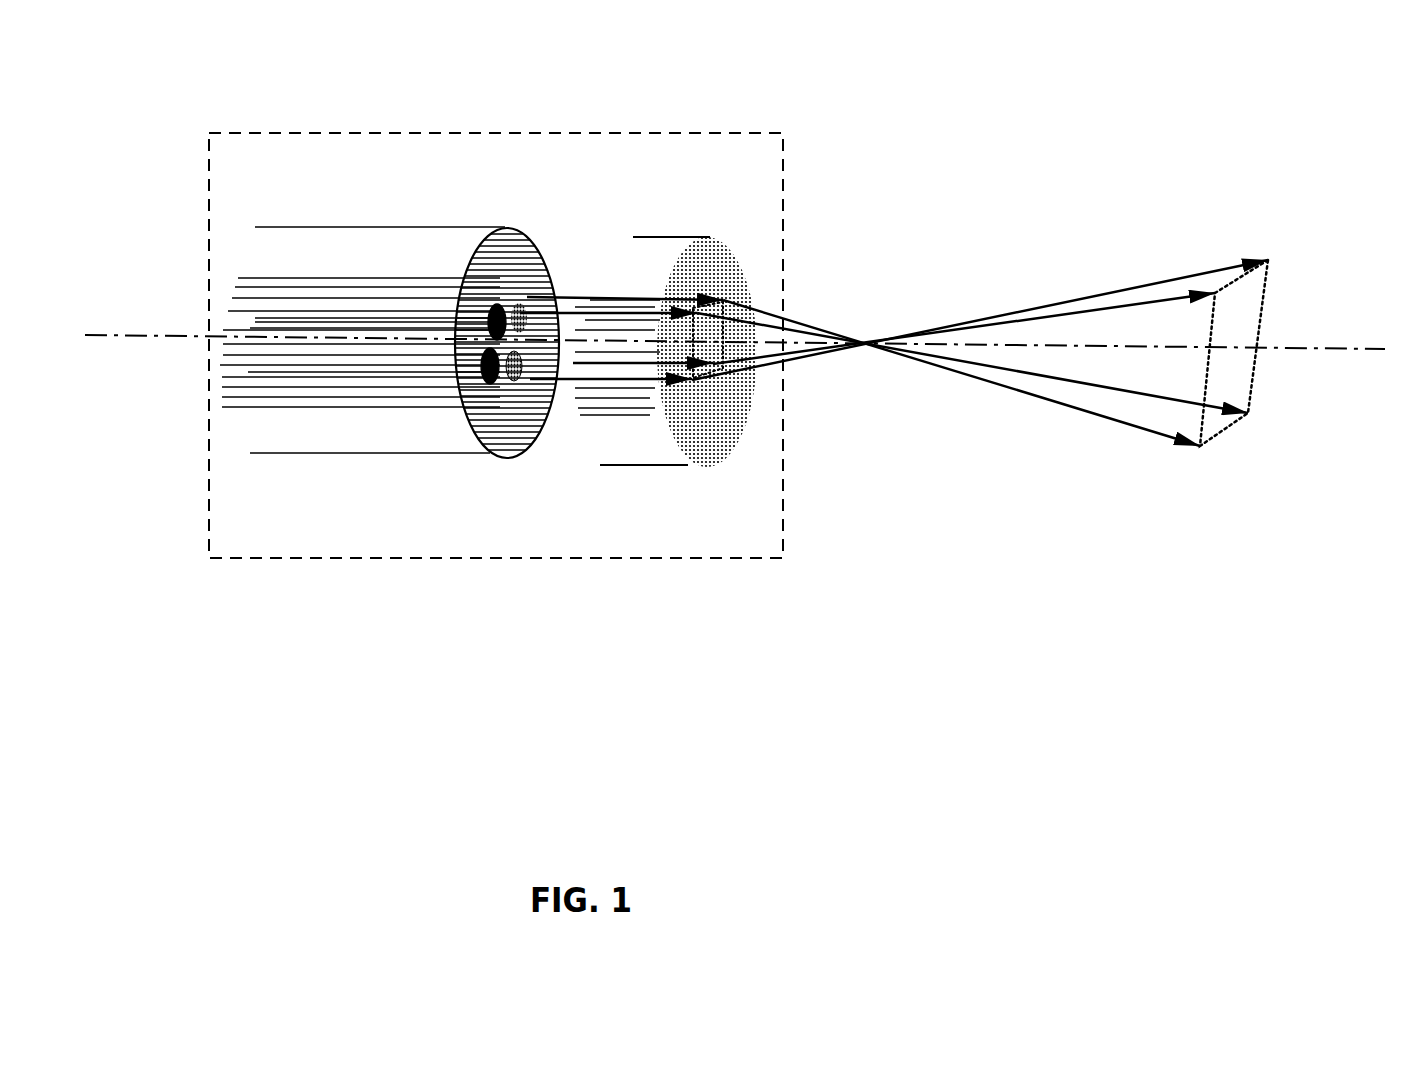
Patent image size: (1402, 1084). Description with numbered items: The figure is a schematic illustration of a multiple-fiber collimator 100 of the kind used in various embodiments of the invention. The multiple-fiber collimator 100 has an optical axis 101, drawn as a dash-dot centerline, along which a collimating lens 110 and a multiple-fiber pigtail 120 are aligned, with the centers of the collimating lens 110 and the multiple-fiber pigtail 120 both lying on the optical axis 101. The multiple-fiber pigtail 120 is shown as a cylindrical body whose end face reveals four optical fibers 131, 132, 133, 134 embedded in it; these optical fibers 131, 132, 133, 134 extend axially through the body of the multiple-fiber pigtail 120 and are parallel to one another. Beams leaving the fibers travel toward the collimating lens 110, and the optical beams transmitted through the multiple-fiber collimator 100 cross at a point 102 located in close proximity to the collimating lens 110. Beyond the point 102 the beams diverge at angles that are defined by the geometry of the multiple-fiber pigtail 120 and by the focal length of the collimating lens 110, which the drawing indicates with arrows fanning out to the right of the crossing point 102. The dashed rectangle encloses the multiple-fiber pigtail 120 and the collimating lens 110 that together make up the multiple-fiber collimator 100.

The multiple-fiber collimator 100 is at (510, 562).
The optical axis 101 is at (150, 337).
The point 102 is at (870, 363).
The collimating lens 110 is at (647, 465).
The multiple-fiber pigtail 120 is at (285, 226).
The optical fiber 131 is at (488, 372).
The optical fiber 132 is at (516, 378).
The optical fiber 133 is at (522, 303).
The optical fiber 134 is at (492, 318).